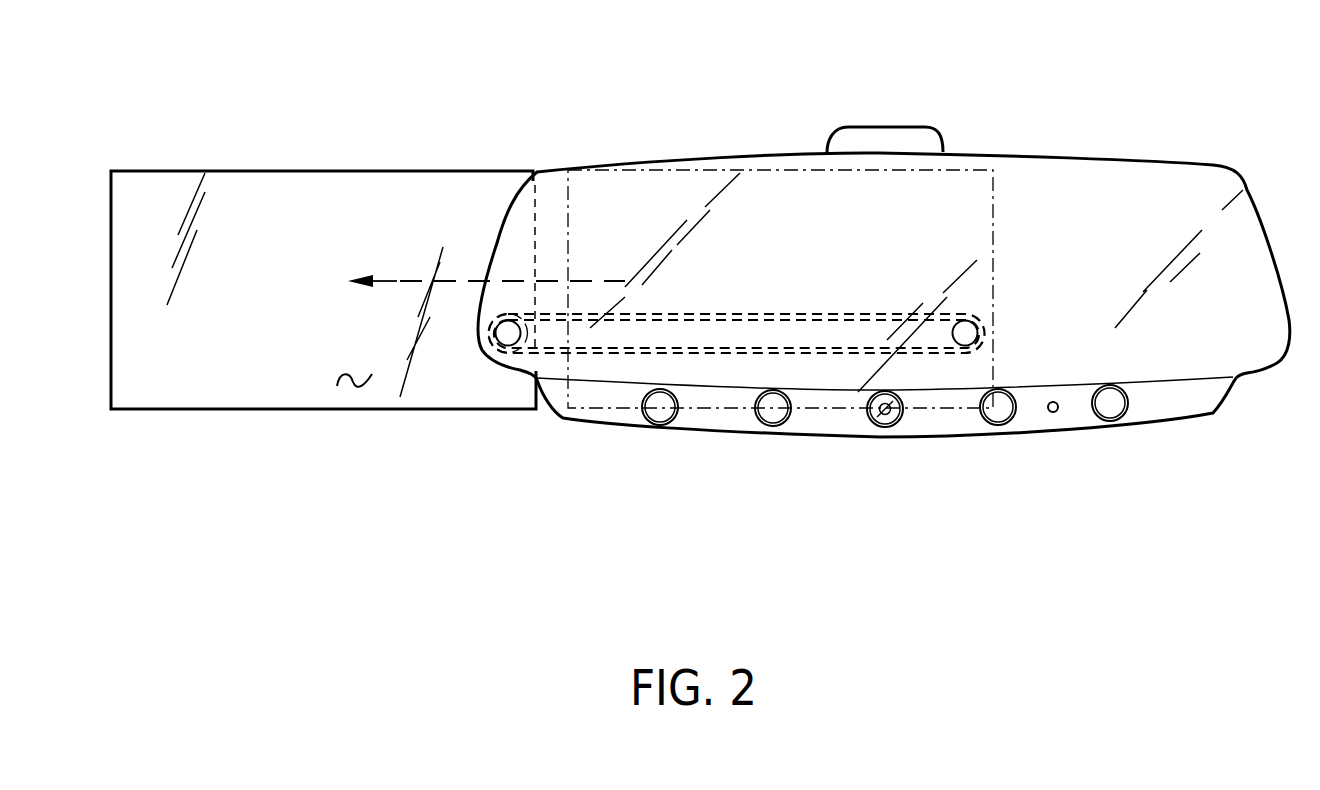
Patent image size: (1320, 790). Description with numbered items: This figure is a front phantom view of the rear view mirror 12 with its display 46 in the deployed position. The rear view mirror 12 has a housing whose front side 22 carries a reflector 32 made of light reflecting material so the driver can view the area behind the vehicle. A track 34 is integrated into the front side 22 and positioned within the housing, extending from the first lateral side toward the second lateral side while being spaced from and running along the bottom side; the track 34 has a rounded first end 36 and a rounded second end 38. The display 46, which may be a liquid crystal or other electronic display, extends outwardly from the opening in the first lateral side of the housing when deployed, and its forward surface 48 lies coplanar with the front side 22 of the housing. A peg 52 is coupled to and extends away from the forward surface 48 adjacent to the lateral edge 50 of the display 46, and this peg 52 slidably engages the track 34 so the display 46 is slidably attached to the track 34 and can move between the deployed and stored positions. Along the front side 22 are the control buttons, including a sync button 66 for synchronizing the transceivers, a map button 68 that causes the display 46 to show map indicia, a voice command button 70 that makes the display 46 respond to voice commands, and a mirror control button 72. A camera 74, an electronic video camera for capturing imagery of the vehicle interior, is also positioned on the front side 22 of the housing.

The rear view mirror 12 is at (1236, 128).
The front side 22 is at (1190, 400).
The reflector 32 is at (1083, 177).
The track 34 is at (948, 356).
The first end 36 is at (495, 336).
The second end 38 is at (985, 333).
The display 46 is at (347, 171).
The forward surface 48 is at (353, 386).
The lateral edge 50 is at (533, 230).
The peg 52 is at (509, 321).
The sync button 66 is at (660, 412).
The map button 68 is at (773, 410).
The voice command button 70 is at (998, 407).
The mirror control button 72 is at (1110, 403).
The camera 74 is at (885, 410).